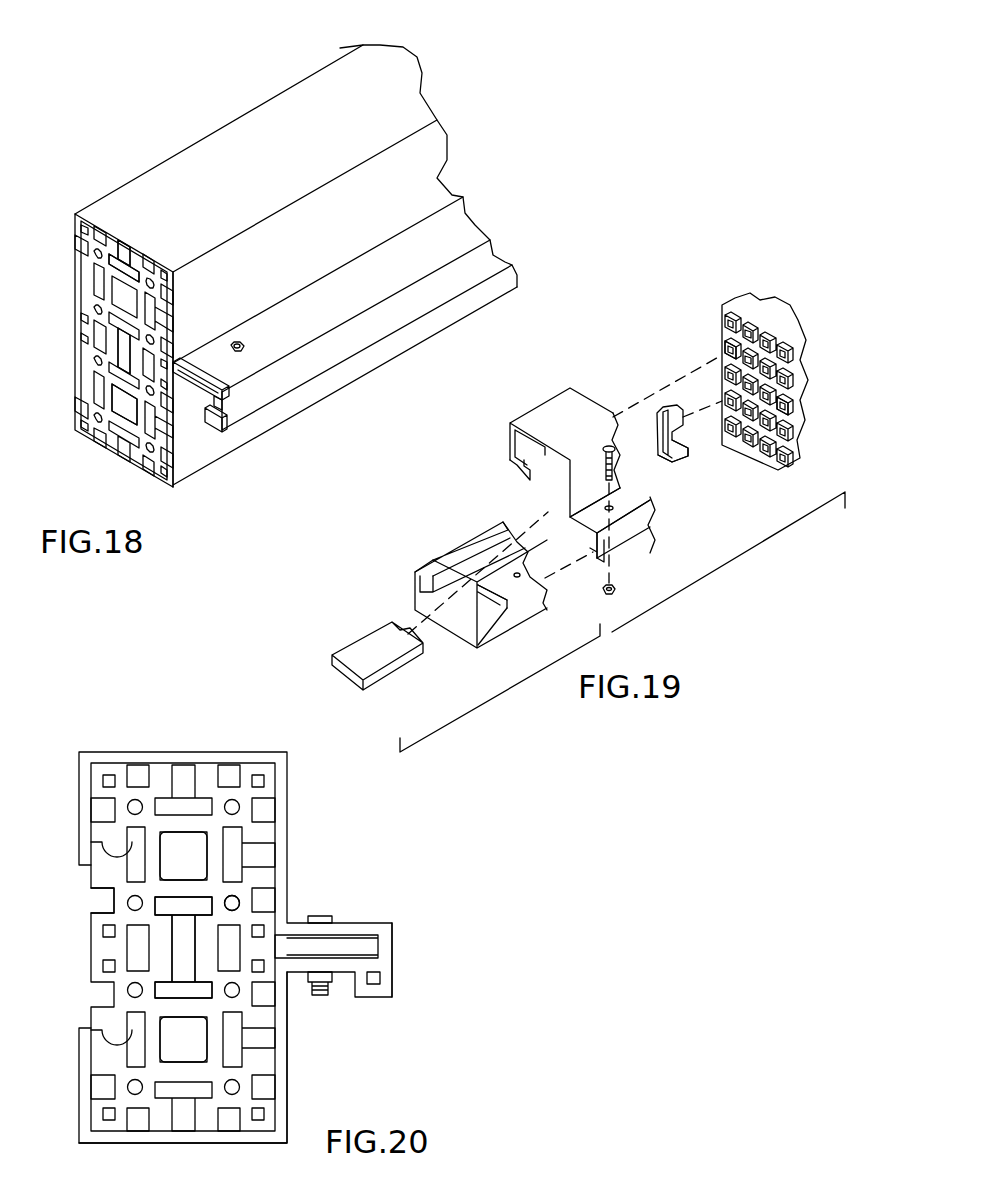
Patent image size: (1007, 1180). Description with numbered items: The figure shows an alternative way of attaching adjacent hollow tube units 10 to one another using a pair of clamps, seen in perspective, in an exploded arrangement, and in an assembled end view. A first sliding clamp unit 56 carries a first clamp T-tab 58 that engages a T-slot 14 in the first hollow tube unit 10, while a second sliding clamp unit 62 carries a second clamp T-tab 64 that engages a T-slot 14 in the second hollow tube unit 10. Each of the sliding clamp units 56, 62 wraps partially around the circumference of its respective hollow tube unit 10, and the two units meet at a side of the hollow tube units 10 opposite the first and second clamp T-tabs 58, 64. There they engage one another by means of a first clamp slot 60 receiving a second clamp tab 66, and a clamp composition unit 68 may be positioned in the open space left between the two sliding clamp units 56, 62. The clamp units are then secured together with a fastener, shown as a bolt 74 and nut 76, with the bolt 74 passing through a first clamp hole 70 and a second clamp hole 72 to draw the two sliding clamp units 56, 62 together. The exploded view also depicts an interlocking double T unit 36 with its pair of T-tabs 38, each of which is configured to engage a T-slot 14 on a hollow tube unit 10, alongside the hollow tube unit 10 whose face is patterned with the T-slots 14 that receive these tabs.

In FIG. 18, the hollow tube unit 10 is at (88, 292).
In FIG. 19, the hollow tube unit 10 is at (780, 318).
In FIG. 20, the hollow tube unit 10 is at (106, 770).
In FIG. 19, the T-slot 14 is at (728, 342).
In FIG. 20, the T-slot 14 is at (108, 853).
In FIG. 18, the interlocking double T unit 36 is at (130, 342).
In FIG. 19, the interlocking double T unit 36 is at (683, 433).
In FIG. 20, the interlocking double T unit 36 is at (183, 934).
In FIG. 19, the T-tab 38 is at (672, 458).
In FIG. 20, the T-tab 38 is at (238, 903).
In FIG. 18, the first sliding clamp unit 56 is at (218, 150).
In FIG. 19, the first sliding clamp unit 56 is at (537, 422).
In FIG. 20, the first sliding clamp unit 56 is at (228, 760).
In FIG. 18, the first clamp T-tab 58 is at (120, 282).
In FIG. 19, the first clamp T-tab 58 is at (516, 474).
In FIG. 20, the first clamp T-tab 58 is at (130, 870).
In FIG. 18, the first clamp slot 60 is at (207, 418).
In FIG. 19, the first clamp slot 60 is at (604, 550).
In FIG. 20, the first clamp slot 60 is at (365, 988).
In FIG. 18, the second sliding clamp unit 62 is at (285, 405).
In FIG. 19, the second sliding clamp unit 62 is at (415, 602).
In FIG. 20, the second sliding clamp unit 62 is at (282, 1082).
In FIG. 18, the second clamp T-tab 64 is at (95, 385).
In FIG. 19, the second clamp T-tab 64 is at (430, 572).
In FIG. 20, the second clamp T-tab 64 is at (130, 1054).
In FIG. 18, the second clamp tab 66 is at (224, 408).
In FIG. 19, the second clamp tab 66 is at (500, 606).
In FIG. 20, the second clamp tab 66 is at (380, 970).
In FIG. 18, the clamp composition unit 68 is at (198, 388).
In FIG. 19, the clamp composition unit 68 is at (355, 652).
In FIG. 20, the clamp composition unit 68 is at (372, 938).
In FIG. 19, the first clamp hole 70 is at (628, 506).
In FIG. 19, the second clamp hole 72 is at (517, 580).
In FIG. 18, the bolt 74 is at (243, 347).
In FIG. 19, the bolt 74 is at (608, 449).
In FIG. 20, the bolt 74 is at (318, 915).
In FIG. 19, the nut 76 is at (607, 596).
In FIG. 20, the nut 76 is at (327, 985).